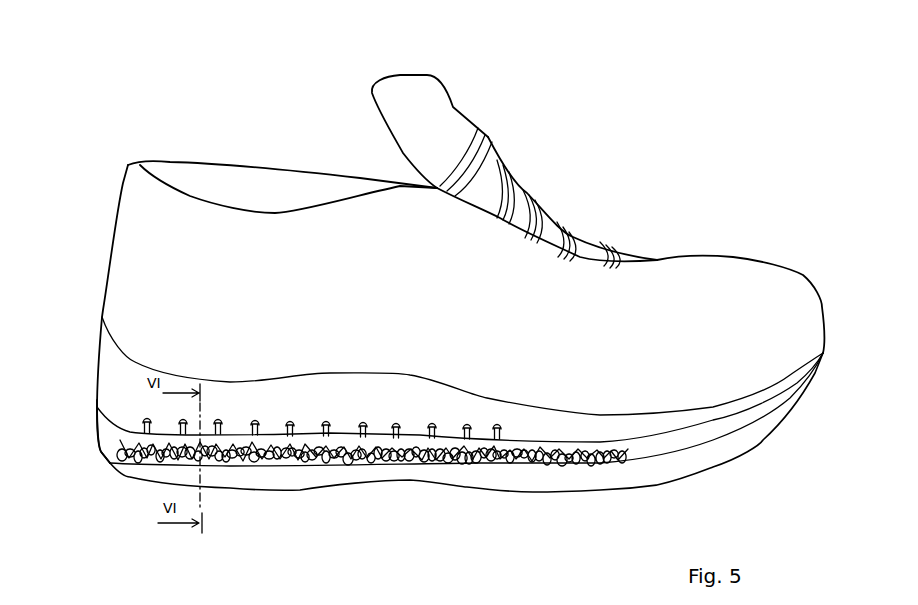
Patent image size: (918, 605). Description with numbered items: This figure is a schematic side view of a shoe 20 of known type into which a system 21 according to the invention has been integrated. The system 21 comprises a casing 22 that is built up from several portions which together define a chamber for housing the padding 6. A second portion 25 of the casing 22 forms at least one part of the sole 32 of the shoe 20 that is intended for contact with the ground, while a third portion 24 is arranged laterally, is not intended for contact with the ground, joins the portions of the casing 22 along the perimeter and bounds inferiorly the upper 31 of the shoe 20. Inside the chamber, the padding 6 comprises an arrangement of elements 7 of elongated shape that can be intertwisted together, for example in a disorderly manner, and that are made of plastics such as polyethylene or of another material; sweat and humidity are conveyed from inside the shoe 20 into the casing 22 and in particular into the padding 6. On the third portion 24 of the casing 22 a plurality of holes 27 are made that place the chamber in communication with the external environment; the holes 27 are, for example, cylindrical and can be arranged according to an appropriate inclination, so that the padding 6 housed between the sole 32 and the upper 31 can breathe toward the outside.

The shoe 20 is at (678, 65).
The system 21 is at (92, 300).
The casing 22 is at (80, 437).
The third portion 24 is at (237, 403).
The second portion 25 is at (157, 477).
The holes 27 is at (148, 418).
The padding 6 is at (353, 437).
The elements 7 is at (433, 447).
The upper 31 is at (717, 313).
The sole 32 is at (577, 480).